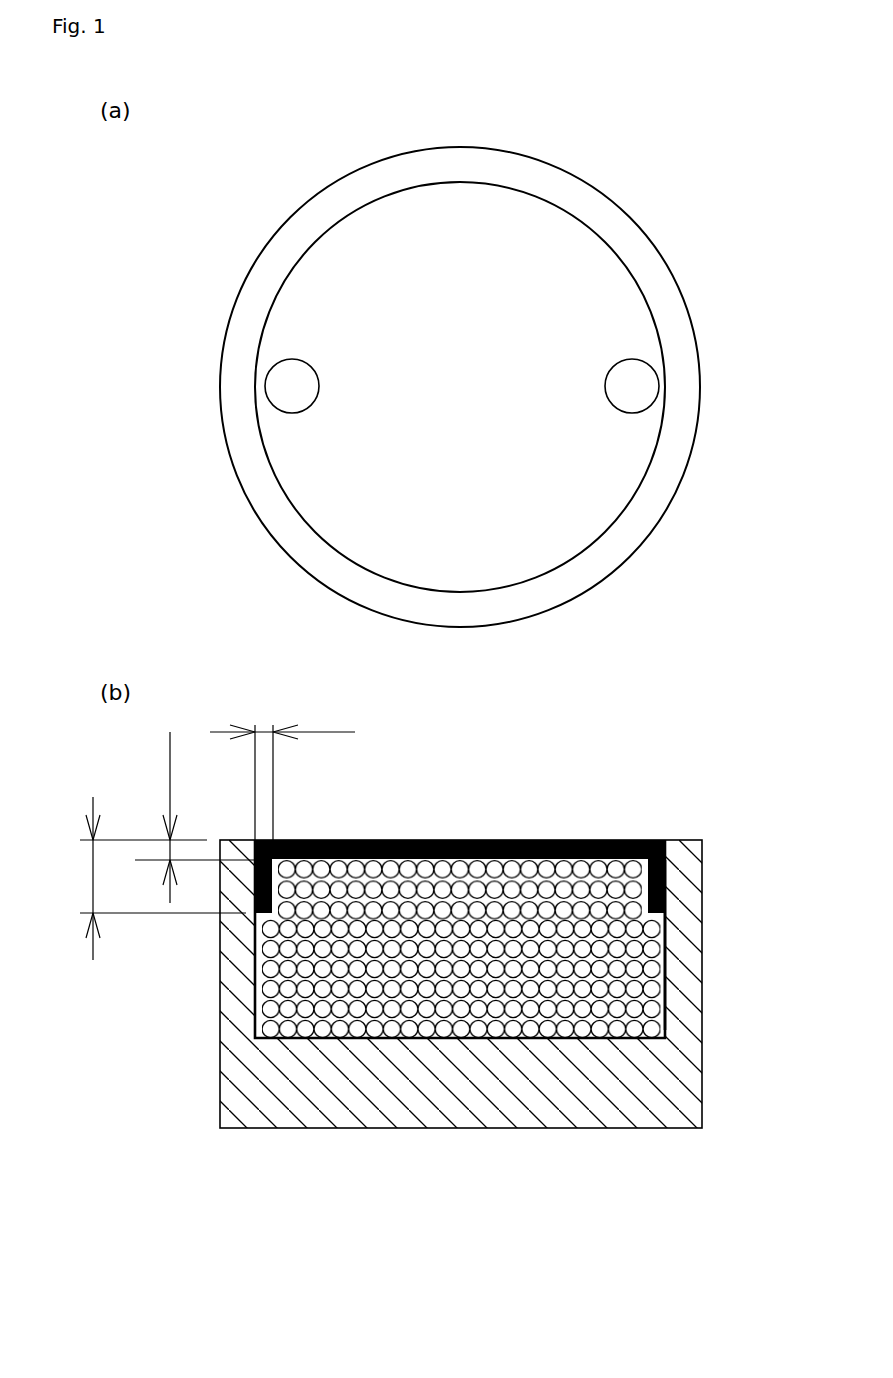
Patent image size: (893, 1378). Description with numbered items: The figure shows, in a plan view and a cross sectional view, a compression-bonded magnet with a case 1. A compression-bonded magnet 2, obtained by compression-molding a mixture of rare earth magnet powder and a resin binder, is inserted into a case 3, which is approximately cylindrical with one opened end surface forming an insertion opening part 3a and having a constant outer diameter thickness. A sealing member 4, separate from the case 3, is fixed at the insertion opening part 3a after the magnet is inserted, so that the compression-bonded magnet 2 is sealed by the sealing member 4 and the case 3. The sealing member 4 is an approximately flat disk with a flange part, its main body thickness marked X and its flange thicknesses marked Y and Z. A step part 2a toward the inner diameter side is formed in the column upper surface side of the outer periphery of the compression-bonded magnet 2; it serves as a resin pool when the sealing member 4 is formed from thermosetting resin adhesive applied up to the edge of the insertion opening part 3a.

The compression-bonded magnet with a case 1 is at (640, 167).
The compression-bonded magnet 2 is at (650, 988).
The step part 2a is at (617, 840).
The case 3 is at (592, 567).
The insertion opening part 3a is at (612, 862).
The sealing member 4 is at (450, 195).